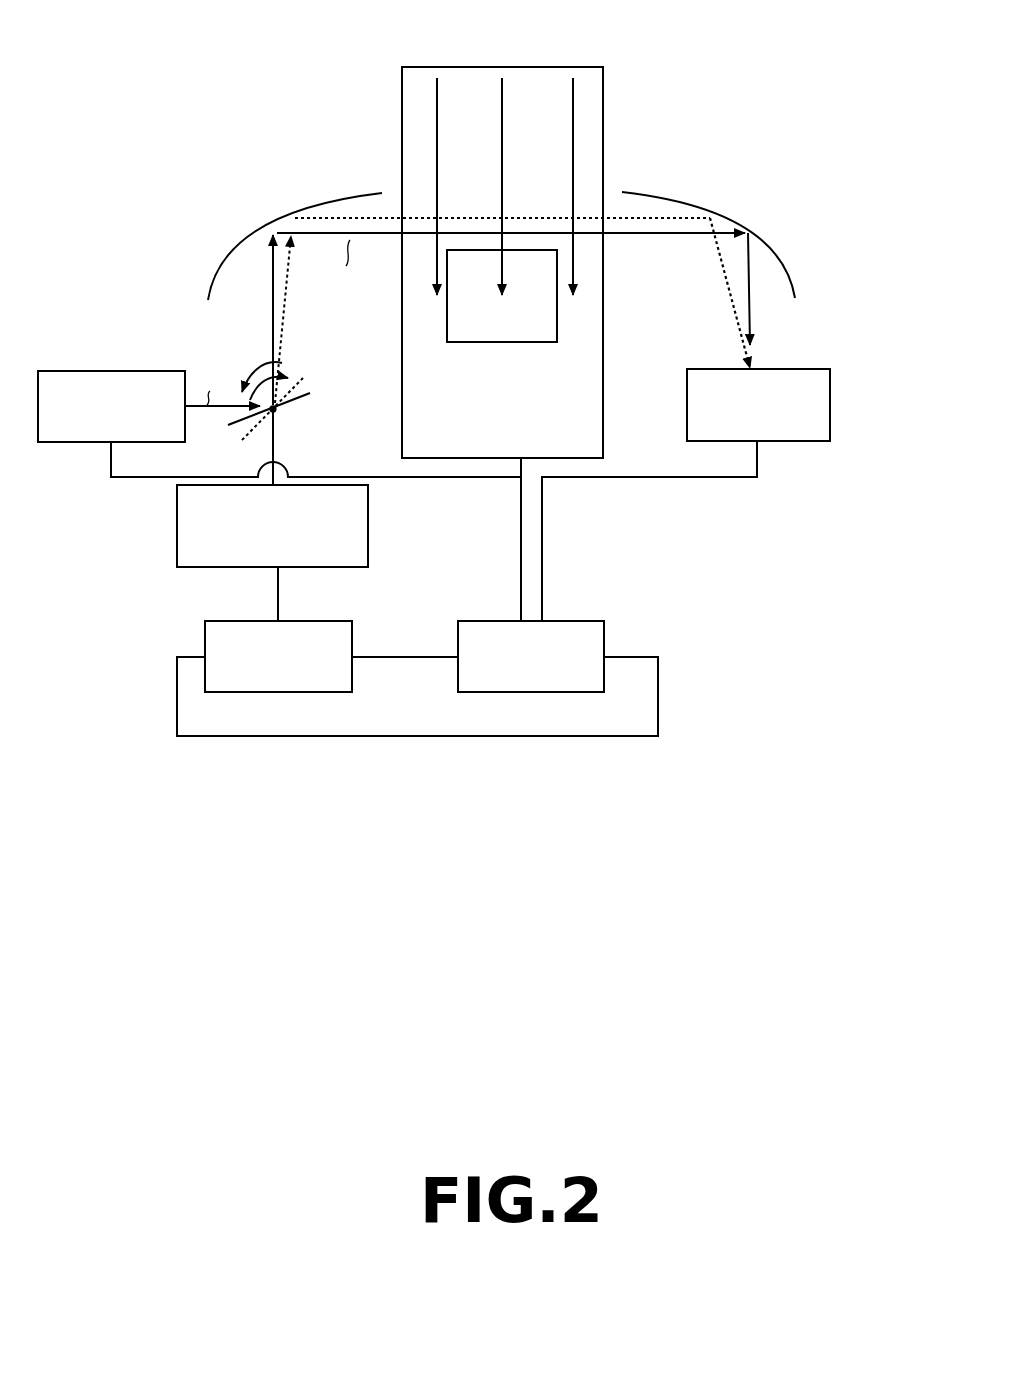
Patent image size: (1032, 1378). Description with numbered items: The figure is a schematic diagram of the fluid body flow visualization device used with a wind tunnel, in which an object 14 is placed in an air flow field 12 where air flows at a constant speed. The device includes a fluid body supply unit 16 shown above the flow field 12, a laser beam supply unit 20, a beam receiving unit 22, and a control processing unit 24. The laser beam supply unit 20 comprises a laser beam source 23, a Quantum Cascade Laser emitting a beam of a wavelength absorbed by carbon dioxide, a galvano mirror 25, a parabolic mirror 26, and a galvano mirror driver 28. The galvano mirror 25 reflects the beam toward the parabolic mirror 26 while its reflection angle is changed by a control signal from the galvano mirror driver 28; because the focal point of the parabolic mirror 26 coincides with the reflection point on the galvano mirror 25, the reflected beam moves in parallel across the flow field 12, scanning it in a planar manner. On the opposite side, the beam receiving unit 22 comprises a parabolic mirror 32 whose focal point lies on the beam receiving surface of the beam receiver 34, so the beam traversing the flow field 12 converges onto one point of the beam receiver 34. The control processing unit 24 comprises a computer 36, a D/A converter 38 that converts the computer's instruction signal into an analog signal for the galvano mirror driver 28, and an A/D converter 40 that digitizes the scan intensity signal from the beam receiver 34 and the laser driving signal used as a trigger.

The air flow field 12 is at (578, 116).
The object 14 is at (499, 334).
The fluid body supply unit 16 is at (537, 229).
The laser beam supply unit 20 is at (391, 272).
The beam receiving unit 22 is at (765, 263).
The laser beam source 23 is at (143, 371).
The control processing unit 24 is at (456, 631).
The galvano mirror 25 is at (280, 412).
The parabolic mirror 26 is at (315, 208).
The galvano mirror driver 28 is at (177, 523).
The parabolic mirror 32 is at (762, 240).
The beam receiver 34 is at (831, 406).
The computer 36 is at (658, 696).
The D/A converter 38 is at (320, 621).
The A/D converter 40 is at (571, 621).